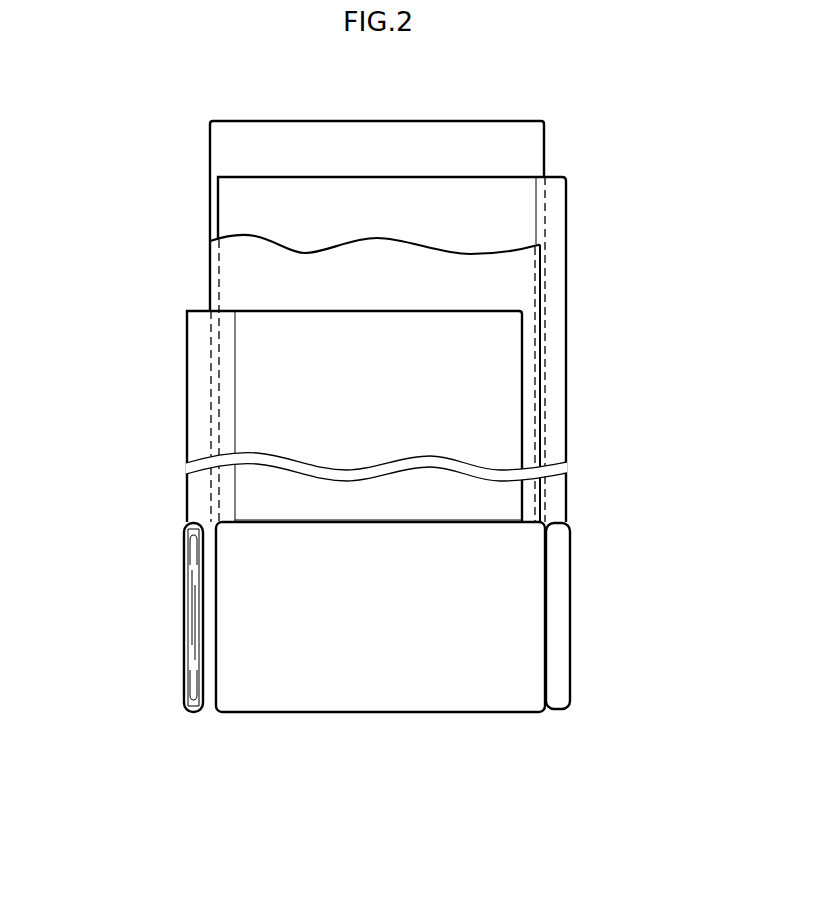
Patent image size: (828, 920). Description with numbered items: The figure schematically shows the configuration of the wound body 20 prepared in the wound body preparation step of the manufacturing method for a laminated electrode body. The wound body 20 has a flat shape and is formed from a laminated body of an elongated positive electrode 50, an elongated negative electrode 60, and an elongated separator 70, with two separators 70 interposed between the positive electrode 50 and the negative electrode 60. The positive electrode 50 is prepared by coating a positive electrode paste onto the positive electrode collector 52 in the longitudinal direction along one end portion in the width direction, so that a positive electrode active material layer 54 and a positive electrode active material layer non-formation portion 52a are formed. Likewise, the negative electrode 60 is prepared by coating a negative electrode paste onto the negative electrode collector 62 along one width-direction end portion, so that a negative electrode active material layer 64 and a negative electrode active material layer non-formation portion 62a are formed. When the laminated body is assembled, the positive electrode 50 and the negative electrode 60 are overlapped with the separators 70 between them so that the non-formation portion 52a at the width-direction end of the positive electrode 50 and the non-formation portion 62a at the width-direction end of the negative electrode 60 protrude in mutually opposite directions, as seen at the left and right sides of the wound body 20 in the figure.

The wound body 20 is at (438, 690).
The positive electrode 50 is at (288, 511).
The positive electrode collector 52 is at (187, 447).
The positive electrode active material layer non-formation portion 52a is at (207, 606).
The positive electrode active material layer 54 is at (248, 330).
The negative electrode 60 is at (447, 441).
The negative electrode collector 62 is at (567, 357).
The negative electrode active material layer non-formation portion 62a is at (553, 325).
The negative electrode active material layer 64 is at (527, 201).
The separator 70 is at (232, 142).